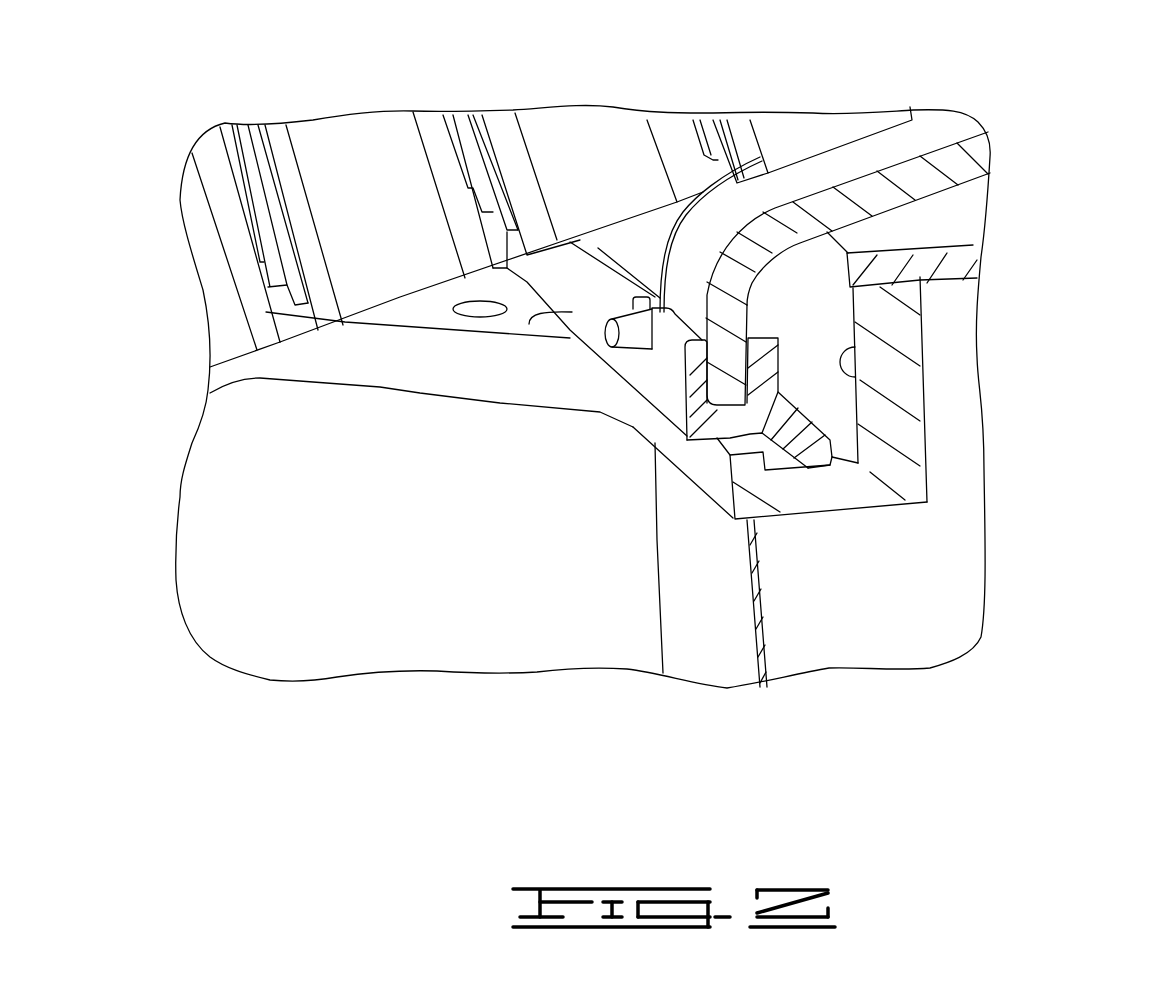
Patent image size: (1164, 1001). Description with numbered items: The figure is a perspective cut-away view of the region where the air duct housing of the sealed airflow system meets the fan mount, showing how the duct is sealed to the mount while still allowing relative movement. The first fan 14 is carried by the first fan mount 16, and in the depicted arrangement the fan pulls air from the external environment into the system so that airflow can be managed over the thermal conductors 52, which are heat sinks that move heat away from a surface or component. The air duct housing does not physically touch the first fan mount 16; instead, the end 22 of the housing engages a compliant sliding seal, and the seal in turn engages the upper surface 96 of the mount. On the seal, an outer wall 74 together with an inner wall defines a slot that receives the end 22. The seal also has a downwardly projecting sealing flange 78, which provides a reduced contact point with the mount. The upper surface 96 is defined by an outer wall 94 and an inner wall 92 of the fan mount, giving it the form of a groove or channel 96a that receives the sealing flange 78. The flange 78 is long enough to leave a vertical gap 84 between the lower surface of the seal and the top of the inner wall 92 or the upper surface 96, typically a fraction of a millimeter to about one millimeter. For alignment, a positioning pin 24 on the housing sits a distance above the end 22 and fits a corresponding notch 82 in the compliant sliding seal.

The first fan 14 is at (717, 653).
The first fan mount 16 is at (918, 330).
The end of air duct housing 22 is at (870, 202).
The positioning pin 24 is at (607, 333).
The thermal conductors 52 is at (328, 137).
The outer wall 74 is at (923, 547).
The sealing flange 78 is at (800, 430).
The notch 82 is at (653, 343).
The vertical gap 84 is at (730, 445).
The inner wall 92 is at (778, 440).
The outer wall 94 is at (858, 375).
The upper surface 96 is at (929, 502).
The groove or channel 96a is at (783, 463).